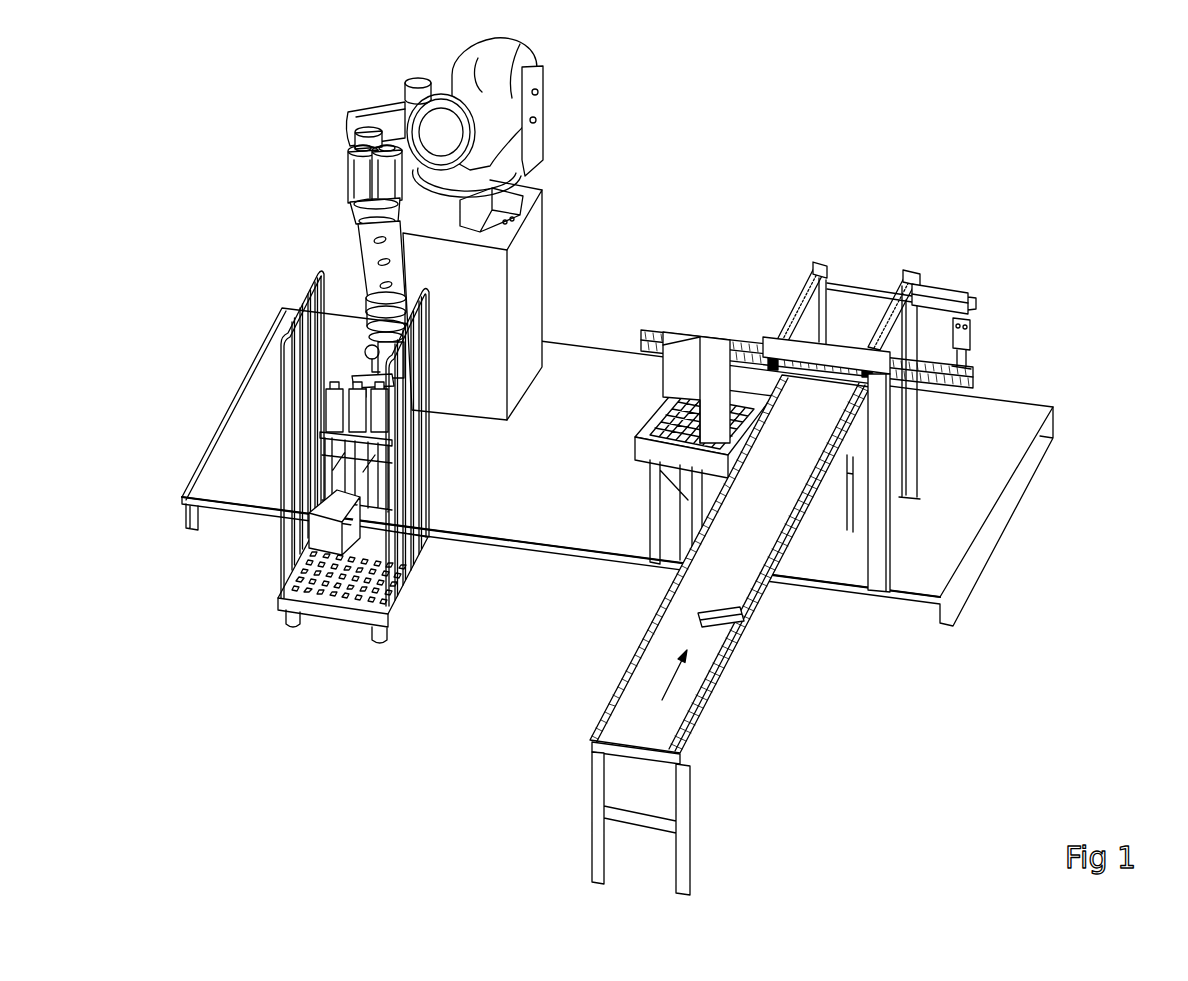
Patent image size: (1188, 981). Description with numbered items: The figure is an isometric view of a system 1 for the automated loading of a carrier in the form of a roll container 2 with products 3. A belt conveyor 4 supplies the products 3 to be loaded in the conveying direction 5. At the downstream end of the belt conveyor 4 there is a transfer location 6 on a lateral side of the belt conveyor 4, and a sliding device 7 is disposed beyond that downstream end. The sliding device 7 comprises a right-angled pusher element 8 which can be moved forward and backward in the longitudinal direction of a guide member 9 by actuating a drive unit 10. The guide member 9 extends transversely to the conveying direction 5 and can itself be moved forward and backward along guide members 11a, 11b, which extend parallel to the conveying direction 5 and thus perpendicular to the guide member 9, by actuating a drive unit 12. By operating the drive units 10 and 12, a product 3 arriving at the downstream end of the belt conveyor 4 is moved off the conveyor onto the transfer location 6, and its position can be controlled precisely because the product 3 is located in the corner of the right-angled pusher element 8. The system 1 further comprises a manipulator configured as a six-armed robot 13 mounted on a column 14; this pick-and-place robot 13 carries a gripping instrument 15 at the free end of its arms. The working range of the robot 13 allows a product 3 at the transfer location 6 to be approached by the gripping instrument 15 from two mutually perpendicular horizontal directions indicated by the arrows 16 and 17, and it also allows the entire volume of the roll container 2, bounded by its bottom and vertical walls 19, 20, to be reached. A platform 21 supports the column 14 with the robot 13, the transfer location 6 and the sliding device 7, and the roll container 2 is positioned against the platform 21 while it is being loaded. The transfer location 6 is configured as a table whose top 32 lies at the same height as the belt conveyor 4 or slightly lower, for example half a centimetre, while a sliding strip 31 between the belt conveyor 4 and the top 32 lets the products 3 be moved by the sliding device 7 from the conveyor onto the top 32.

The system 1 is at (1068, 205).
The roll container 2 is at (232, 609).
The product 3 is at (355, 597).
The belt conveyor 4 is at (705, 635).
The conveying direction 5 is at (727, 675).
The transfer location 6 is at (680, 474).
The sliding device 7 is at (1015, 296).
The right-angled pusher element 8 is at (700, 347).
The guide member 9 is at (945, 397).
The drive unit 10 is at (972, 350).
The guide member 11a is at (796, 298).
The guide member 11b is at (880, 318).
The drive unit 12 is at (940, 292).
The six-armed robot 13 is at (562, 151).
The column 14 is at (530, 276).
The gripping instrument 15 is at (343, 352).
The arrow 16 is at (592, 406).
The arrow 17 is at (737, 322).
The vertical wall 19 is at (288, 480).
The vertical wall 20 is at (412, 488).
The platform 21 is at (963, 540).
The sliding strip 31 is at (764, 413).
The top 32 is at (648, 460).